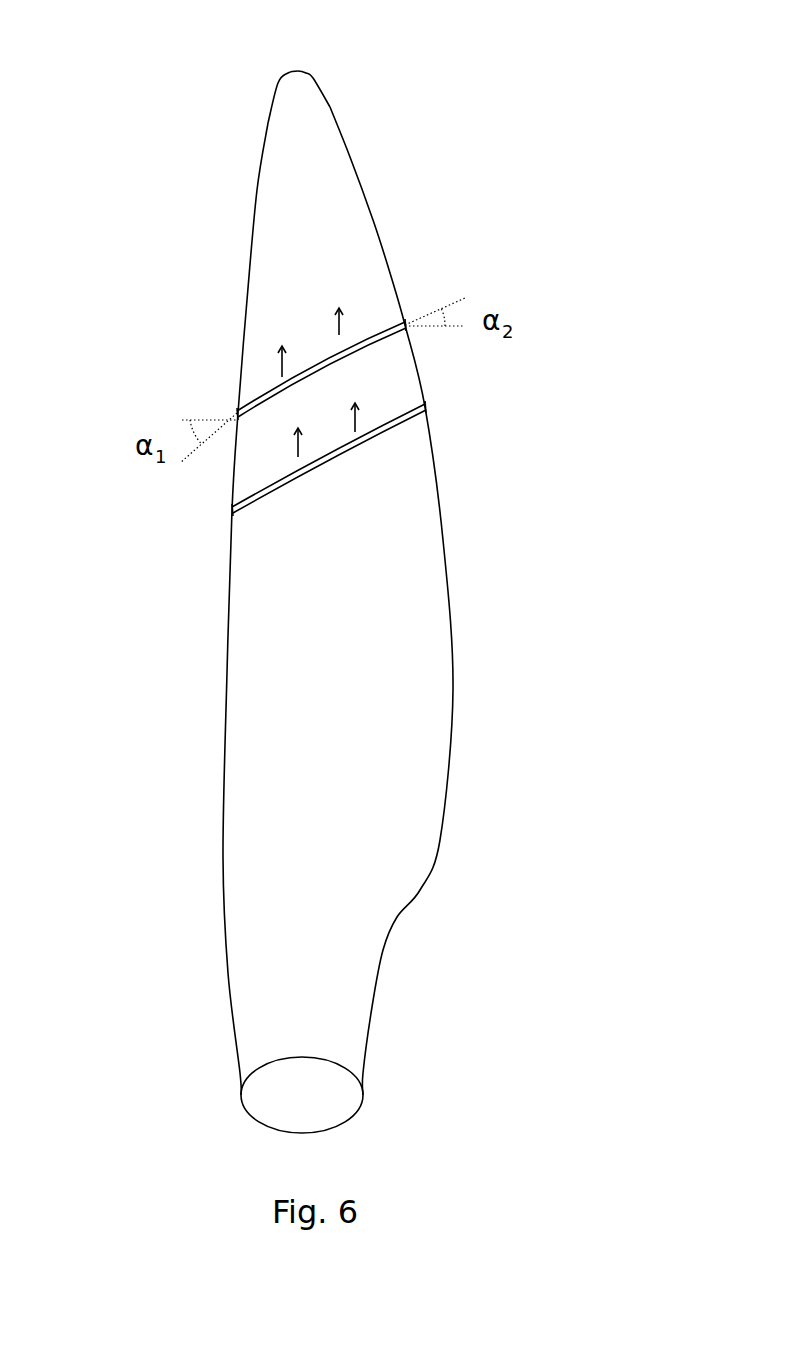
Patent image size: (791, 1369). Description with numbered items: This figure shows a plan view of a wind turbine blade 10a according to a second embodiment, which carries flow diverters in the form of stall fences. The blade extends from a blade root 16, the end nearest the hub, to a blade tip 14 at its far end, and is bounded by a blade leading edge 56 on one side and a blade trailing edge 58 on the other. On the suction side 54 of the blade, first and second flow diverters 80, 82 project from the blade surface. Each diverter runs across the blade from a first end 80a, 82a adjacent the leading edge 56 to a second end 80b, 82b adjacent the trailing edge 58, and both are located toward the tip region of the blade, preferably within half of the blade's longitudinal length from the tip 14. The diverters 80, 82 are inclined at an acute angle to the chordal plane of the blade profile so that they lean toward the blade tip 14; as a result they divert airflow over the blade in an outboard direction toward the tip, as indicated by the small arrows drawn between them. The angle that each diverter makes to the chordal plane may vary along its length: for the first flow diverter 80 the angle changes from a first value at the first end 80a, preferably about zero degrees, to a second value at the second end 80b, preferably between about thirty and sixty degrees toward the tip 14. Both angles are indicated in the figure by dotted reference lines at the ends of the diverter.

The wind turbine blade 10a is at (353, 601).
The blade tip 14 is at (257, 88).
The blade root 16 is at (235, 1130).
The suction side 54 is at (346, 668).
The blade leading edge 56 is at (203, 793).
The blade trailing edge 58 is at (447, 858).
The first flow diverter 80 is at (295, 271).
The first end of first flow diverter 80a is at (237, 412).
The second end of first flow diverter 80b is at (405, 325).
The second flow diverter 82 is at (321, 518).
The first end of second flow diverter 82a is at (230, 513).
The second end of second flow diverter 82b is at (425, 407).